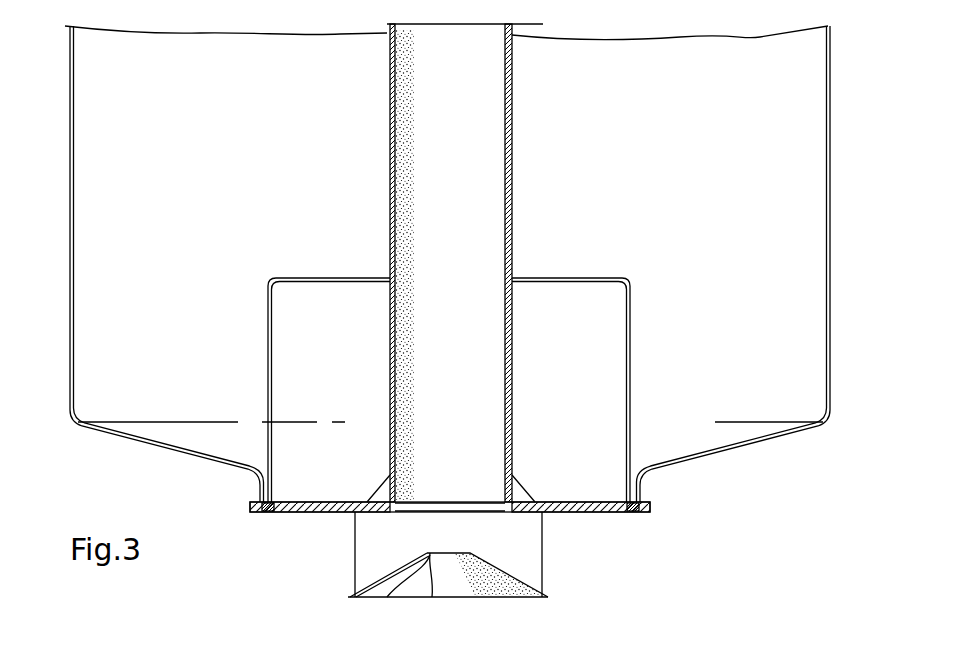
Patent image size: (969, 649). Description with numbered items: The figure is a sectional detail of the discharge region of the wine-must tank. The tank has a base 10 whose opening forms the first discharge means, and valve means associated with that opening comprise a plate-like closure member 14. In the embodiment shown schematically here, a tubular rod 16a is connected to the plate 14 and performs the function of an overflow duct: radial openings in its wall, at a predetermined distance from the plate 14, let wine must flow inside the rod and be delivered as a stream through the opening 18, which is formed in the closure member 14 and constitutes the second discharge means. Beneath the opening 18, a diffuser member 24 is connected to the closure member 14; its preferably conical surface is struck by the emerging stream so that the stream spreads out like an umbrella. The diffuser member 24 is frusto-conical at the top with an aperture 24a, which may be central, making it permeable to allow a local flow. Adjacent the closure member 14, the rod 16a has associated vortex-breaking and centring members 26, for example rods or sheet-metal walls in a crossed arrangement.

The base 10 is at (730, 448).
The closure member 14 is at (303, 512).
The tubular rod 16a is at (390, 262).
The opening 18 is at (404, 510).
The diffuser member 24 is at (495, 593).
The aperture 24a is at (387, 597).
The vortex-breaking and centring members 26 is at (580, 278).